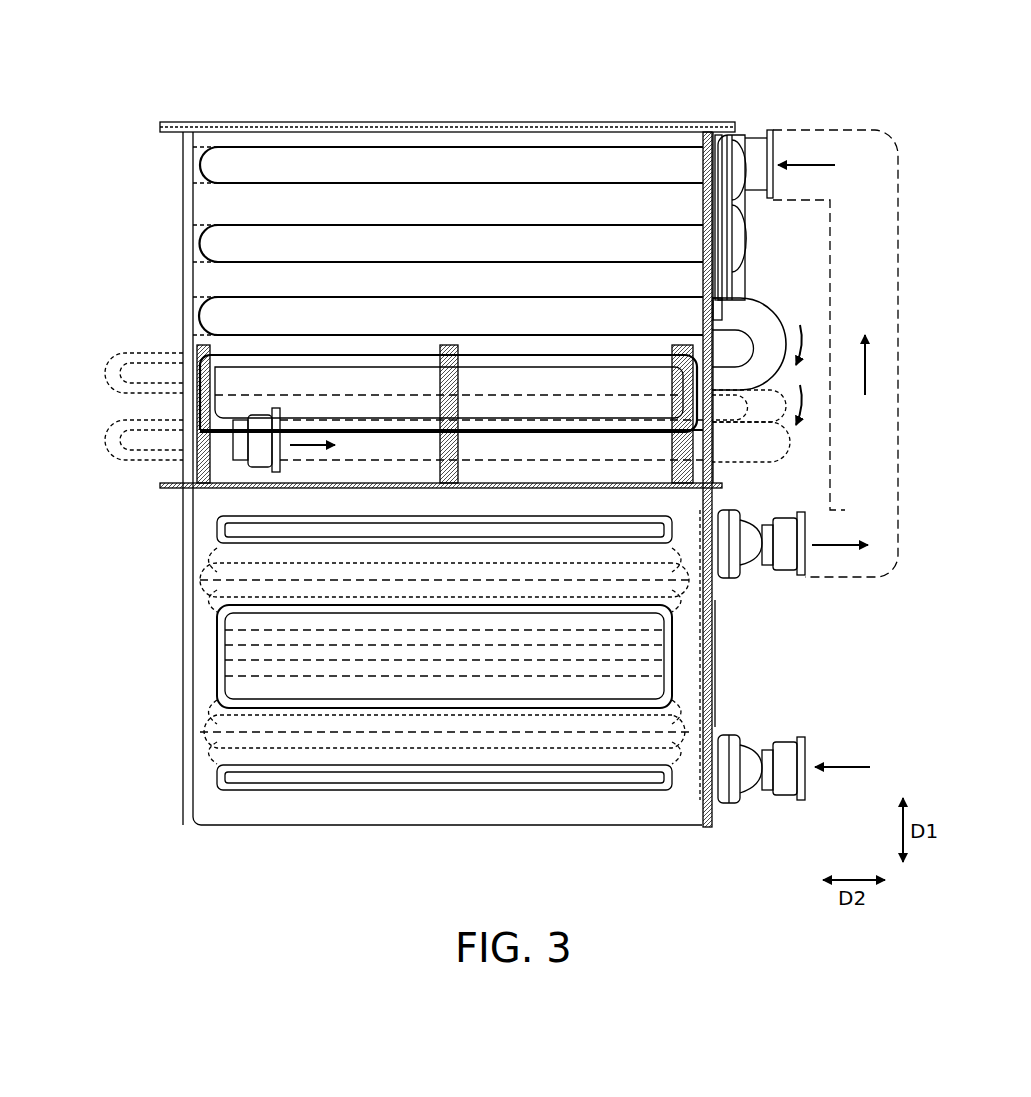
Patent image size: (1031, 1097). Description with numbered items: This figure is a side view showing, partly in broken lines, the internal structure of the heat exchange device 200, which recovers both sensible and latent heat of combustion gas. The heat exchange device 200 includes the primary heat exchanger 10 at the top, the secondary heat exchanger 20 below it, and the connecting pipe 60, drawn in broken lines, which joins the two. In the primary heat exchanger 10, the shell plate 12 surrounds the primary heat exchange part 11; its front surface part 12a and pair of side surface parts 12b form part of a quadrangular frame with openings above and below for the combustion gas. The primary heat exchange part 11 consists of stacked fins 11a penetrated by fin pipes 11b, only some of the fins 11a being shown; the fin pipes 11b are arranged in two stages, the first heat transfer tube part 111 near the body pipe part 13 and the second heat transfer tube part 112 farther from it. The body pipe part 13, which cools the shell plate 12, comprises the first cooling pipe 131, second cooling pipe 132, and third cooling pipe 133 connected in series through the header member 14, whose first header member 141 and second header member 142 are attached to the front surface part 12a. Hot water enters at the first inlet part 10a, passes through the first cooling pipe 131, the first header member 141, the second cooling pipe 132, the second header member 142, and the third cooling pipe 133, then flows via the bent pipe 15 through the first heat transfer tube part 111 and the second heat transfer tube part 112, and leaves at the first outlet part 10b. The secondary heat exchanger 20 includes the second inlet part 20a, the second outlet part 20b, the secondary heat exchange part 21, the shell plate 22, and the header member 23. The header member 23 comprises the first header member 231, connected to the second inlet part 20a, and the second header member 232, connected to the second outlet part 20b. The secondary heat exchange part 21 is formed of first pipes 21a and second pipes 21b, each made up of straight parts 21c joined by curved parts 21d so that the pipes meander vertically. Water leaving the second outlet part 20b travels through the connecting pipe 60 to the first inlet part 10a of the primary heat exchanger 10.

The primary heat exchanger 10 is at (248, 135).
The first inlet part 10a is at (752, 150).
The first outlet part 10b is at (258, 455).
The primary heat exchange part 11 is at (450, 262).
The fins 11a is at (465, 385).
The fin pipes 11b is at (415, 380).
The first heat transfer tube part 111 is at (585, 370).
The second heat transfer tube part 112 is at (530, 440).
The shell plate 12 is at (315, 130).
The front surface part 12a is at (718, 135).
The side surface parts 12b is at (665, 140).
The body pipe part 13 is at (390, 241).
The first cooling pipe 131 is at (182, 165).
The second cooling pipe 132 is at (182, 246).
The third cooling pipe 133 is at (410, 316).
The header member 14 is at (858, 217).
The first header member 141 is at (745, 198).
The second header member 142 is at (745, 240).
The bent pipe 15 is at (150, 447).
The secondary heat exchanger 20 is at (195, 505).
The second inlet part 20a is at (790, 780).
The second outlet part 20b is at (785, 555).
The secondary heat exchange part 21 is at (551, 680).
The first pipes 21a is at (700, 520).
The second pipes 21b is at (678, 548).
The straight parts 21c is at (284, 545).
The curved parts 21d is at (200, 556).
The shell plate 22 is at (200, 805).
The header member 23 is at (809, 656).
The first header member 231 is at (735, 738).
The second header member 232 is at (735, 580).
The connecting pipe 60 is at (900, 382).
The heat exchange device 200 is at (852, 100).